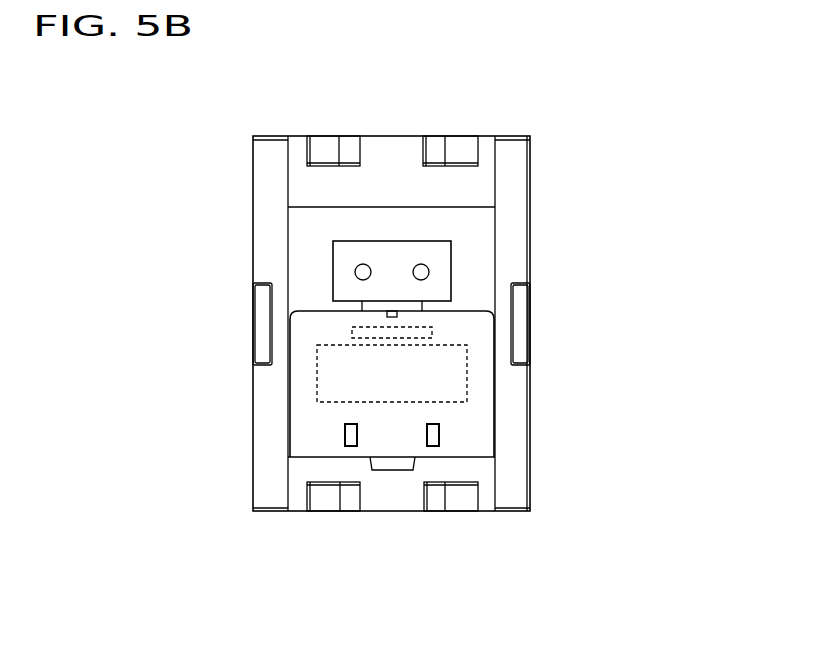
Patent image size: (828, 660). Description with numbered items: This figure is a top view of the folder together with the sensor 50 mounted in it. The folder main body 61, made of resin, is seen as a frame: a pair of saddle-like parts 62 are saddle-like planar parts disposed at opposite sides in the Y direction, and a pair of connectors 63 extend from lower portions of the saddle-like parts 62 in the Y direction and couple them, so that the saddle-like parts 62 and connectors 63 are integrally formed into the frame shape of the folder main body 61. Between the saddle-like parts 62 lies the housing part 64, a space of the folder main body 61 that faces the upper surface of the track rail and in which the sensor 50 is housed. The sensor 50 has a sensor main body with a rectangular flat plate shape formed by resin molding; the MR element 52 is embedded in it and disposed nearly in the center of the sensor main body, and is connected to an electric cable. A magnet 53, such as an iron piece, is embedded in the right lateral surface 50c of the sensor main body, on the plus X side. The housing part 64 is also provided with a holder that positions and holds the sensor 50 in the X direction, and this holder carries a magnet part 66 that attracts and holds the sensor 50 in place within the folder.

The sensor 50 is at (485, 391).
The right lateral surface of the sensor main body 50c is at (466, 312).
The MR element 52 is at (317, 391).
The magnet 53 is at (352, 330).
The folder main body 61 is at (550, 480).
The saddle-like part 62 is at (258, 192).
The connector 63 is at (376, 155).
The housing part 64 is at (470, 246).
The magnet part 66 is at (398, 250).